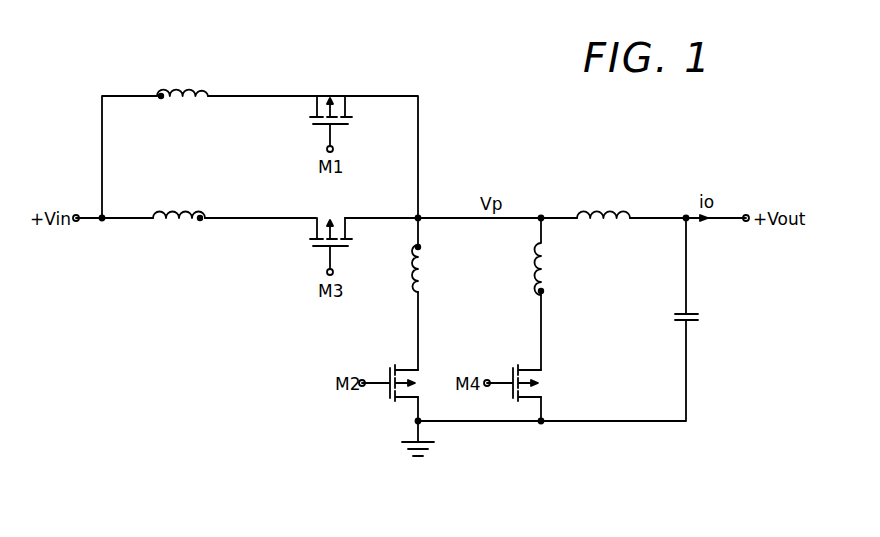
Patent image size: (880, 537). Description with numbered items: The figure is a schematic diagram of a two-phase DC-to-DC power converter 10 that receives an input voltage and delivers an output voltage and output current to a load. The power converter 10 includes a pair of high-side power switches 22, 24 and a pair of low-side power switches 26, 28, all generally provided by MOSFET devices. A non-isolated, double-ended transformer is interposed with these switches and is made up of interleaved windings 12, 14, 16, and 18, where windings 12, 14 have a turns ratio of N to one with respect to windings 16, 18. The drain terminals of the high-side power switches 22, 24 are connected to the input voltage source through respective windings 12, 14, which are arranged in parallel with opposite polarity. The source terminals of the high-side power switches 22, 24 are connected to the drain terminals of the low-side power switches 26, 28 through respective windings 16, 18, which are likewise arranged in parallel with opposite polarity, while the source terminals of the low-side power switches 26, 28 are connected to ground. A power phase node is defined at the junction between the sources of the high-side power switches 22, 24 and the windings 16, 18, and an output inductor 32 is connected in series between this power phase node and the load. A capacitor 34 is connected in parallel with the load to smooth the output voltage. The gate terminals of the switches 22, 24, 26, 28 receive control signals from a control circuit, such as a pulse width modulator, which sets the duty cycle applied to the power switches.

The two-phase DC-to-DC power converter 10 is at (202, 264).
The winding 12 is at (203, 95).
The winding 14 is at (203, 216).
The winding 16 is at (411, 291).
The winding 18 is at (543, 264).
The high-side power switch 22 is at (353, 101).
The high-side power switch 24 is at (357, 231).
The low-side power switch 26 is at (388, 390).
The low-side power switch 28 is at (547, 377).
The output inductor 32 is at (626, 213).
The capacitor 34 is at (700, 318).